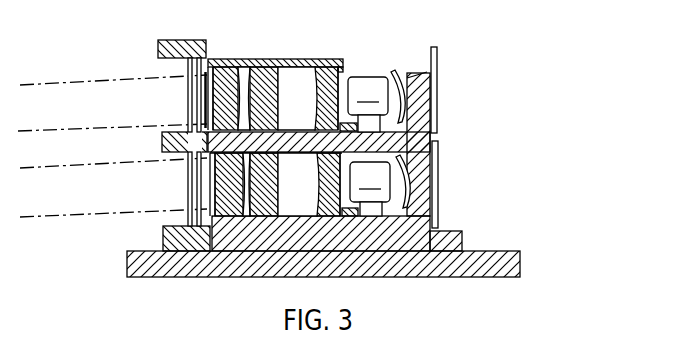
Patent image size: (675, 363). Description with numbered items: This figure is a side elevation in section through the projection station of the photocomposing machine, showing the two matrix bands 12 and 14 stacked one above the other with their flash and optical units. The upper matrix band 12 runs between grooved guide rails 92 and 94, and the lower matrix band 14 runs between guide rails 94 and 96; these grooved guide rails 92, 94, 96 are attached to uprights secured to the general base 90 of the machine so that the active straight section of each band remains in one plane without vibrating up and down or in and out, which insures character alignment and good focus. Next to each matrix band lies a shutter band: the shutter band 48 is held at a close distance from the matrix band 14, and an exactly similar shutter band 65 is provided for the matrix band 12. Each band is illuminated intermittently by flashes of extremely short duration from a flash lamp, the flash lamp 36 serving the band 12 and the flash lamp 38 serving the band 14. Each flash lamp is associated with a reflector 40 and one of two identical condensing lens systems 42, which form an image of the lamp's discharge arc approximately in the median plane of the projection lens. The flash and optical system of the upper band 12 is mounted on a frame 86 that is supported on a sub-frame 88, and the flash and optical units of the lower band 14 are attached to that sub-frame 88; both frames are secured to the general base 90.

The matrix band 12 is at (197, 117).
The matrix band 14 is at (197, 195).
The flash lamp 36 is at (368, 104).
The flash lamp 38 is at (370, 189).
The reflector 40 is at (392, 72).
The condensing lens system 42 is at (283, 59).
The shutter band 48 is at (188, 171).
The shutter band 65 is at (188, 92).
The frame 86 is at (420, 102).
The sub-frame 88 is at (450, 231).
The general base 90 is at (520, 261).
The grooved guide rail 92 is at (157, 53).
The grooved guide rail 94 is at (162, 142).
The grooved guide rail 96 is at (163, 235).